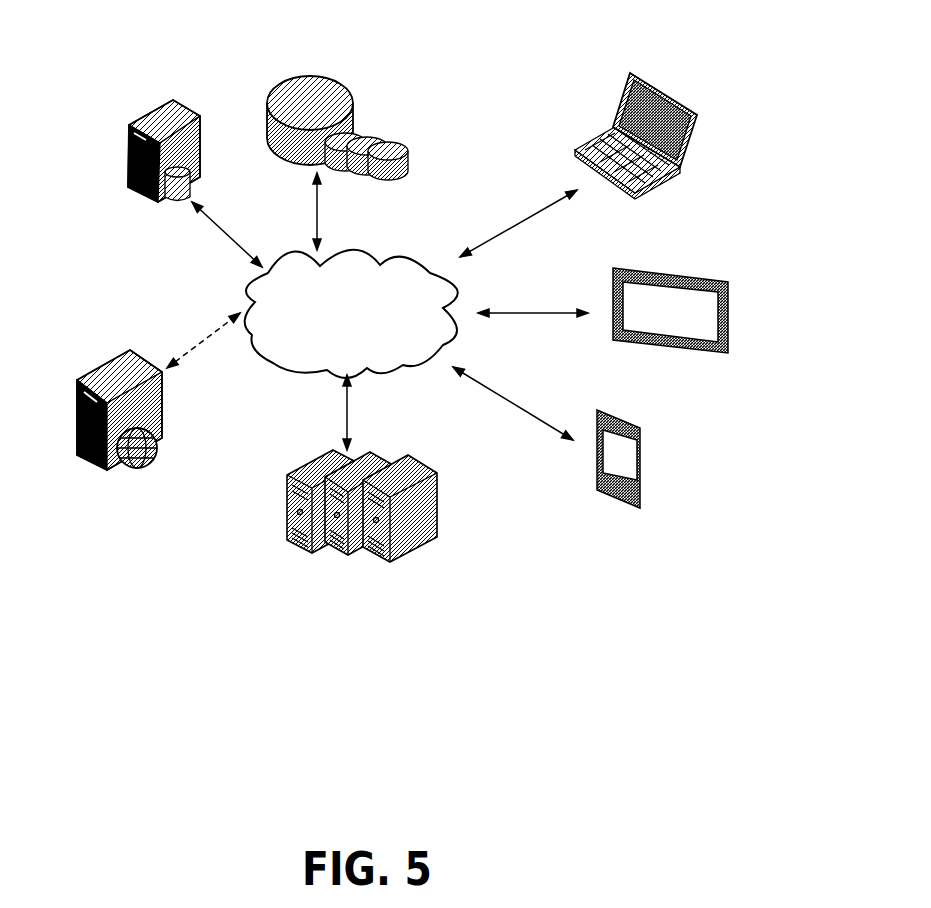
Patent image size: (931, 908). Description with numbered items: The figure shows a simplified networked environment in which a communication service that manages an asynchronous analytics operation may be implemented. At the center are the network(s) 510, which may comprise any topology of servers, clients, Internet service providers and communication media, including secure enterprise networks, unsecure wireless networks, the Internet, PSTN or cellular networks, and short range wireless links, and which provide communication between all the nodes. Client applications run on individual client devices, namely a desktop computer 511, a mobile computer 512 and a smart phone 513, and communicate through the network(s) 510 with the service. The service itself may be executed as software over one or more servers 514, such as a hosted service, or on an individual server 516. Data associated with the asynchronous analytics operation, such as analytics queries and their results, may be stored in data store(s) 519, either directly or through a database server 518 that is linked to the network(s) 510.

The network(s) 510 is at (352, 237).
The desktop computer 511 is at (670, 77).
The mobile computer 512 is at (703, 252).
The smart phone 513 is at (647, 427).
The servers 514 is at (313, 452).
The individual server 516 is at (98, 362).
The database server 518 is at (165, 210).
The data store(s) 519 is at (325, 57).